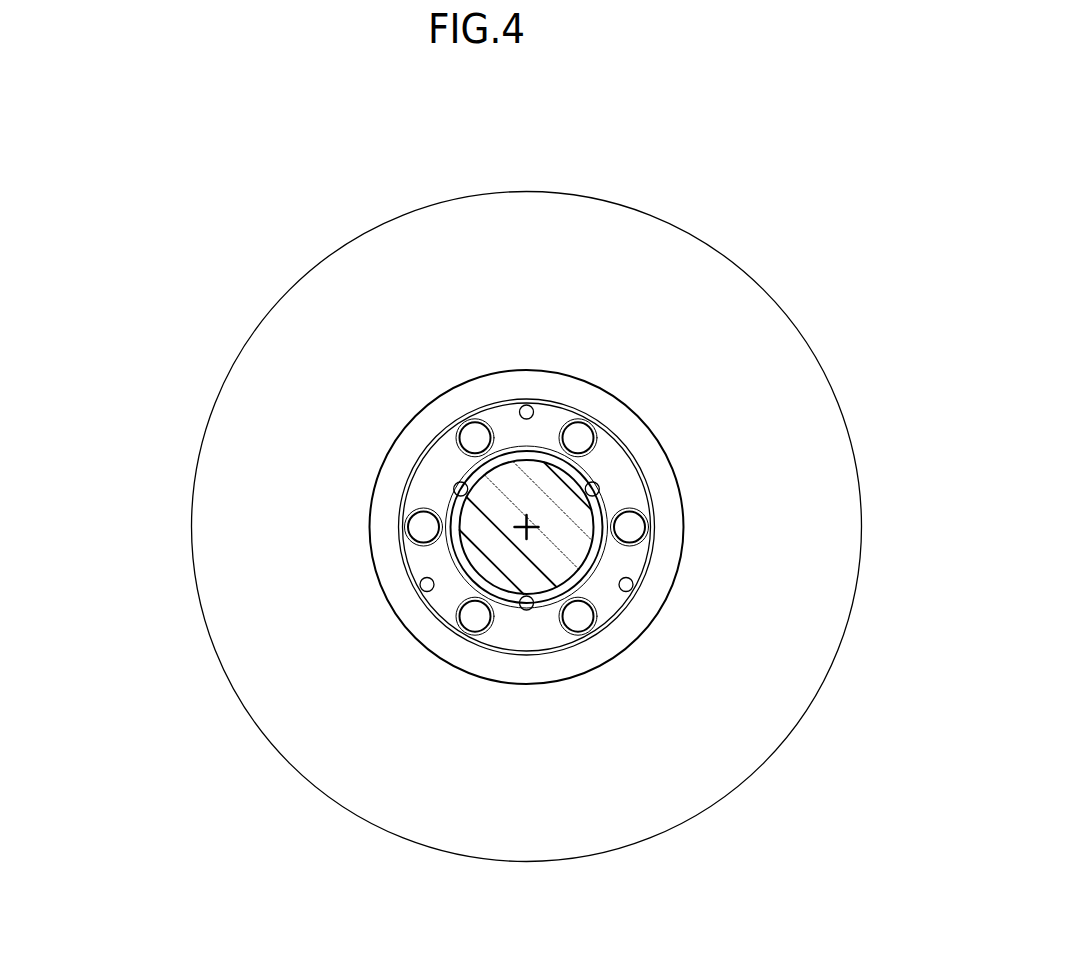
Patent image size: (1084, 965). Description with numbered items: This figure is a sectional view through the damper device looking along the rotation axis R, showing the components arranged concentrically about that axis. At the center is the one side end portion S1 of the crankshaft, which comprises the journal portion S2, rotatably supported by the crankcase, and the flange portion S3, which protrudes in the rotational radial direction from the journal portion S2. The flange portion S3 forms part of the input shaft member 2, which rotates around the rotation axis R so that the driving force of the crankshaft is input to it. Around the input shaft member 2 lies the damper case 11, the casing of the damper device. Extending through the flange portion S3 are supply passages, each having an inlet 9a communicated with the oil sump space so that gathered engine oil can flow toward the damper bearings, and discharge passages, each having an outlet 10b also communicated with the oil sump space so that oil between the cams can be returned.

The input shaft member 2 is at (420, 500).
The inlet 9a is at (461, 489).
The outlet 10b is at (527, 405).
The damper case 11 is at (223, 448).
The rotation axis R is at (530, 524).
The one side end portion S1 is at (326, 588).
The journal portion S2 is at (492, 548).
The flange portion S3 is at (415, 555).